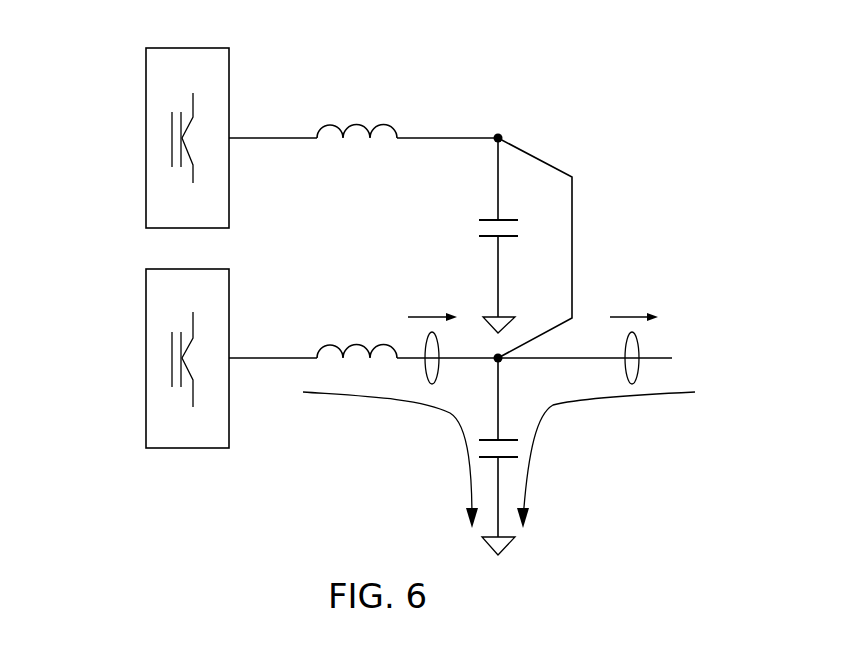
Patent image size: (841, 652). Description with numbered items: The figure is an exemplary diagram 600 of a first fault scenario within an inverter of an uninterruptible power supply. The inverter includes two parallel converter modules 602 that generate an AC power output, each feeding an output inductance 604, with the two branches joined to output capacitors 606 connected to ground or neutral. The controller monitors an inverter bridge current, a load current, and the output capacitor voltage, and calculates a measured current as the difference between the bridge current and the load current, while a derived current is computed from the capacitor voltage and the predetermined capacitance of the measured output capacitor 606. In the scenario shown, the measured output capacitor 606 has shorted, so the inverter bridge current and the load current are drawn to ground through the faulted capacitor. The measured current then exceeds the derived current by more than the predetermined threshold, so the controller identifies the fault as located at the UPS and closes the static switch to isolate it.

The diagram 600 is at (592, 75).
The converter module 602 is at (146, 138).
The output inductance 604 is at (355, 125).
The output capacitor 606 is at (487, 218).